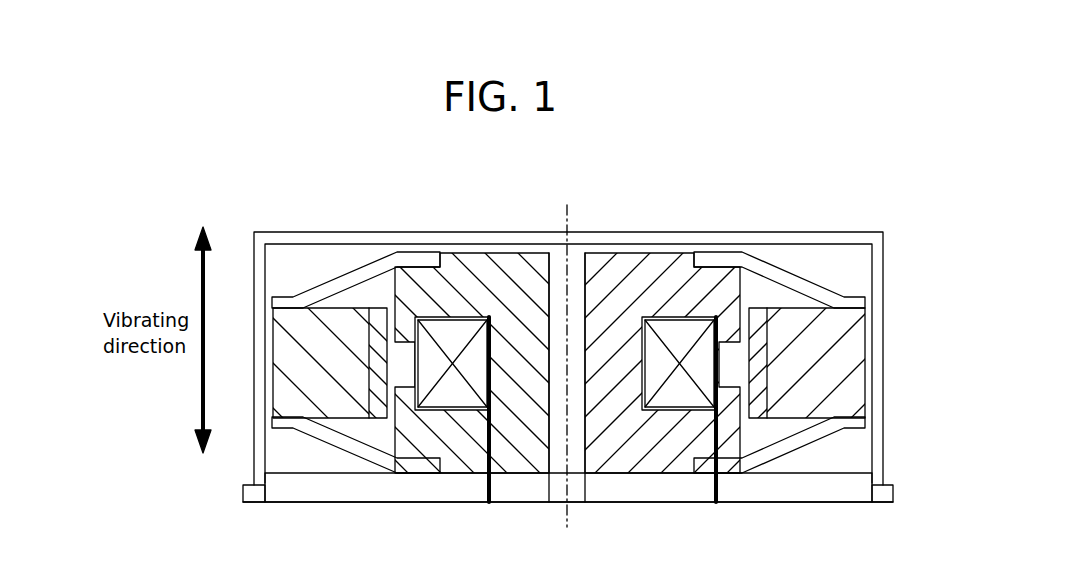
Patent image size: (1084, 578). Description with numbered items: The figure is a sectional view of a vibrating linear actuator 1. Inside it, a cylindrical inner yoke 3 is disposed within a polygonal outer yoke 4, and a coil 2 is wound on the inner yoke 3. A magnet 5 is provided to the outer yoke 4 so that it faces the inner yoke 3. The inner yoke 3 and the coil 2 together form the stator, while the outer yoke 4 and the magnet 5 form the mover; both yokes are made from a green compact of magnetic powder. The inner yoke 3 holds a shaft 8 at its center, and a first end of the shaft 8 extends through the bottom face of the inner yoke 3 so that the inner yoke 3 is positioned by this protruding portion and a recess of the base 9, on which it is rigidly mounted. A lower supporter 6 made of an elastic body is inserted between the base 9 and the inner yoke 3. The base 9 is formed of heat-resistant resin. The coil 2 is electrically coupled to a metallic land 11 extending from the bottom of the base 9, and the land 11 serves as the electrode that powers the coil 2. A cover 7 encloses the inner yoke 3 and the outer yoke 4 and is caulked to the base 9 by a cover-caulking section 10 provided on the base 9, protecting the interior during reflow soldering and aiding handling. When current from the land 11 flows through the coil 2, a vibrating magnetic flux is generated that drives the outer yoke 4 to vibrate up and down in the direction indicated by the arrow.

The actuator 1 is at (636, 210).
The coil 2 is at (680, 335).
The inner yoke 3 is at (507, 270).
The outer yoke 4 is at (845, 318).
The magnet 5 is at (372, 320).
The lower supporter 6 is at (760, 448).
The cover 7 is at (376, 243).
The shaft 8 is at (577, 270).
The base 9 is at (622, 493).
The cover-caulking section 10 is at (888, 487).
The metallic land 11 is at (425, 502).